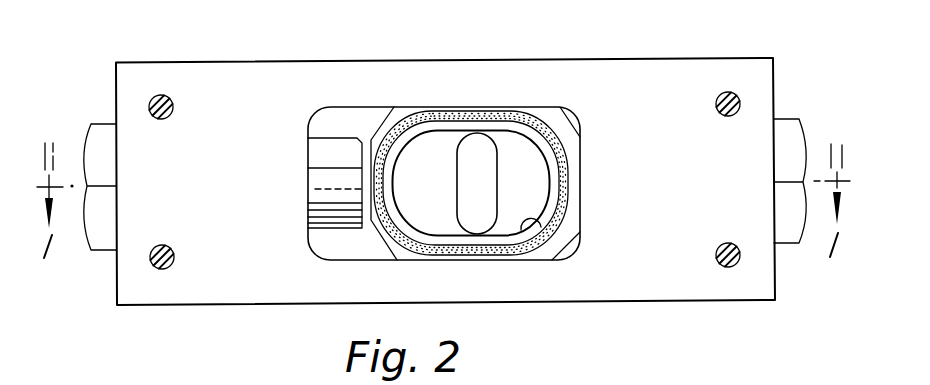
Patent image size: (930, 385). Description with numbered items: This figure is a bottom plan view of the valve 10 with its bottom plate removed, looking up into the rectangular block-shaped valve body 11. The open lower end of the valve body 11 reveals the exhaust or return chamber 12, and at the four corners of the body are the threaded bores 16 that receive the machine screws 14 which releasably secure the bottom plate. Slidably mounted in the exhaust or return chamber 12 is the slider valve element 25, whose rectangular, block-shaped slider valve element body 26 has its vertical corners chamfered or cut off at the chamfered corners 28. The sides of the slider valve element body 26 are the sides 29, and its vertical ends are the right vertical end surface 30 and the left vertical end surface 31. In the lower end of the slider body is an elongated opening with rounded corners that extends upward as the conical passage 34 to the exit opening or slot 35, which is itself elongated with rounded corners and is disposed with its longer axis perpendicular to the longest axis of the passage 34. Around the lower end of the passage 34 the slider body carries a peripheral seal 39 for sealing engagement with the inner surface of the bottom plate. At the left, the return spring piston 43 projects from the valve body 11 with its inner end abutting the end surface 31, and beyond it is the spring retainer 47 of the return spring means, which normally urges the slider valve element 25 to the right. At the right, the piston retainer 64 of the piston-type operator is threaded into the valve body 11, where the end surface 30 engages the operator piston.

The valve 10 is at (245, 52).
The valve body 11 is at (197, 78).
The exhaust or return chamber 12 is at (574, 166).
The machine screws 14 is at (161, 94).
The threaded bores 16 is at (170, 115).
The slider valve element 25 is at (570, 118).
The slider valve element body 26 is at (402, 115).
The chamfered corners 28 is at (380, 128).
The sides of the slider valve element body 29 is at (481, 109).
The right vertical end surface 30 is at (579, 150).
The left vertical end surface 31 is at (308, 168).
The conical passage 34 is at (524, 230).
The exit opening or slot 35 is at (488, 182).
The peripheral seal 39 is at (567, 190).
The return spring piston 43 is at (333, 216).
The spring retainer 47 is at (93, 110).
The piston retainer 64 is at (798, 103).